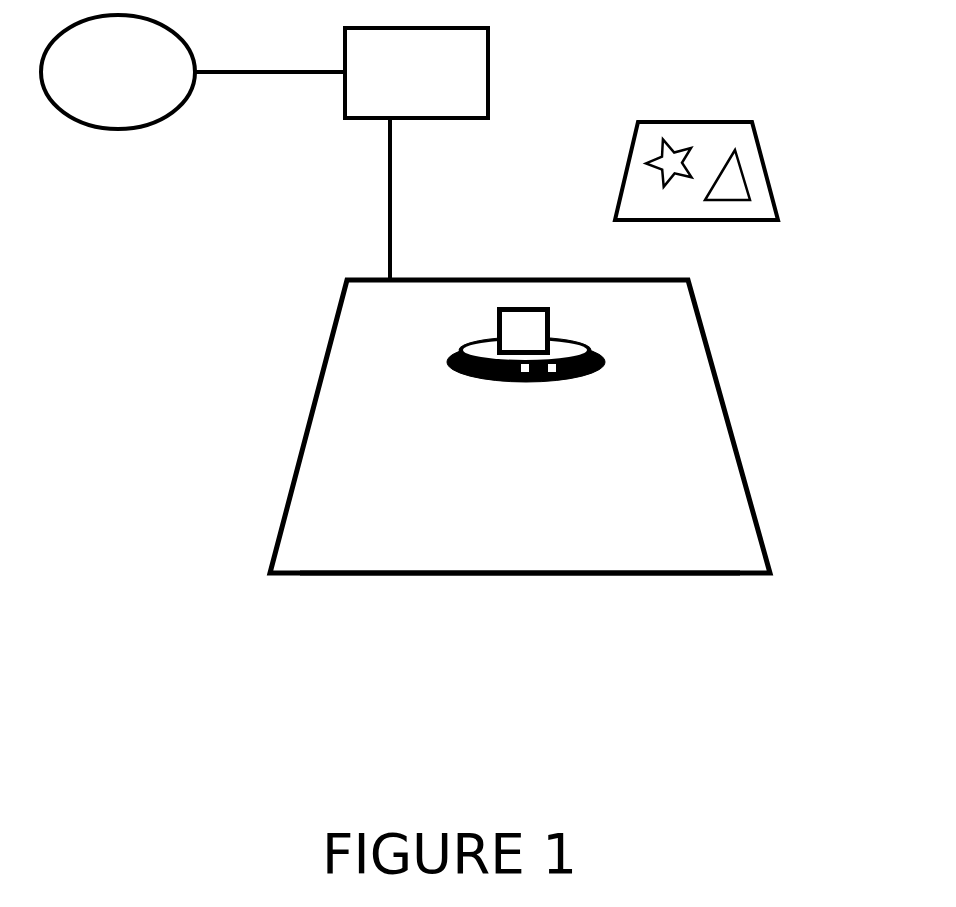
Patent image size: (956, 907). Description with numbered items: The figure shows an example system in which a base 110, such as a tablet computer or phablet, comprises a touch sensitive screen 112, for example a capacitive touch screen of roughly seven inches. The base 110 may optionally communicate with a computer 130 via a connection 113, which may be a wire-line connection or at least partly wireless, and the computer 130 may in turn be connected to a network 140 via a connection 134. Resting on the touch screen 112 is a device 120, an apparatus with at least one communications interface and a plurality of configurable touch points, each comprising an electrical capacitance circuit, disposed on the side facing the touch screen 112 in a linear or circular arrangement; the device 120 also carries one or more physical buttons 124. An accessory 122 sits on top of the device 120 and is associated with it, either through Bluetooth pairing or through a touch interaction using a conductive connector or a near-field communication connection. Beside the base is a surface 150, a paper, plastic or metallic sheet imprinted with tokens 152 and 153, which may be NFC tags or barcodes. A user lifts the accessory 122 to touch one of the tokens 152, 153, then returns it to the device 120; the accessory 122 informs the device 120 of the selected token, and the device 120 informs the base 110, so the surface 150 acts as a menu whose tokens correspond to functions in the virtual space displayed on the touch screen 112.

The base 110 is at (303, 442).
The touch sensitive screen 112 is at (367, 535).
The connection 113 is at (390, 200).
The device 120 is at (497, 383).
The accessory 122 is at (552, 322).
The physical buttons 124 is at (530, 382).
The computer 130 is at (416, 73).
The connection 134 is at (264, 72).
The network 140 is at (118, 72).
The surface 150 is at (762, 158).
The token 152 is at (676, 145).
The token 153 is at (728, 198).